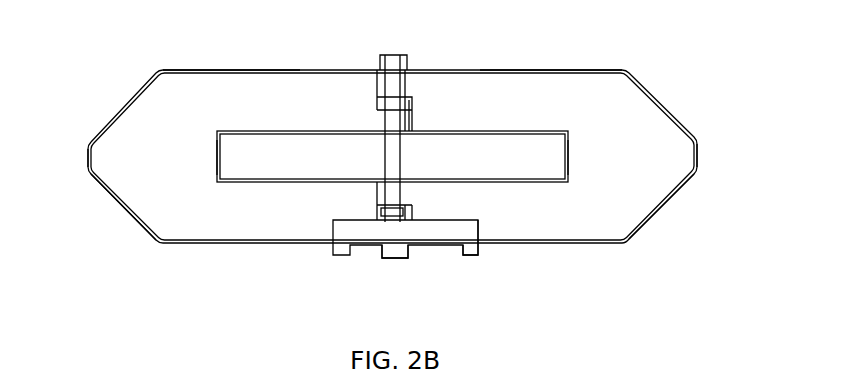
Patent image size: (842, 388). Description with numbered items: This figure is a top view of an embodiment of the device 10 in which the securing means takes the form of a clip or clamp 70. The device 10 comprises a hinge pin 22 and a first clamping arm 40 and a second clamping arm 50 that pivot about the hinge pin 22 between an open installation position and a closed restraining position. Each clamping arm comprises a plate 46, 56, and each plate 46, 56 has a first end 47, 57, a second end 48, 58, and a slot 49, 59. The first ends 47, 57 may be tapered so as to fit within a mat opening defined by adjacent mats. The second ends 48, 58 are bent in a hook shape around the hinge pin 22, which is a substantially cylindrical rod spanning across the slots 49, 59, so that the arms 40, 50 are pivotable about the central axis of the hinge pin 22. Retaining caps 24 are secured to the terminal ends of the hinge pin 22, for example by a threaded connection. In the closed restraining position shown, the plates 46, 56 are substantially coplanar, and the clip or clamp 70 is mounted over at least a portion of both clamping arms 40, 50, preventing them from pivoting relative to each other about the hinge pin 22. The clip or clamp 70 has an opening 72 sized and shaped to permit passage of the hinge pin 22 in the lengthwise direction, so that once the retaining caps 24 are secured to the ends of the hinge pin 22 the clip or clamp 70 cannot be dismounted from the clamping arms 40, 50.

The device 10 is at (702, 56).
The first clamping arm 40 is at (226, 57).
The second clamping arm 50 is at (574, 58).
The first end of plate 47 is at (86, 156).
The slot 49 is at (214, 156).
The slot 59 is at (571, 154).
The first end of plate 57 is at (699, 165).
The plate 46 is at (186, 235).
The plate 56 is at (593, 238).
The hinge pin 22 is at (402, 160).
The retaining cap 24 is at (391, 52).
The second end of plate 48 is at (403, 122).
The second end of plate 58 is at (397, 192).
The clip or clamp 70 is at (470, 250).
The opening 72 is at (435, 255).